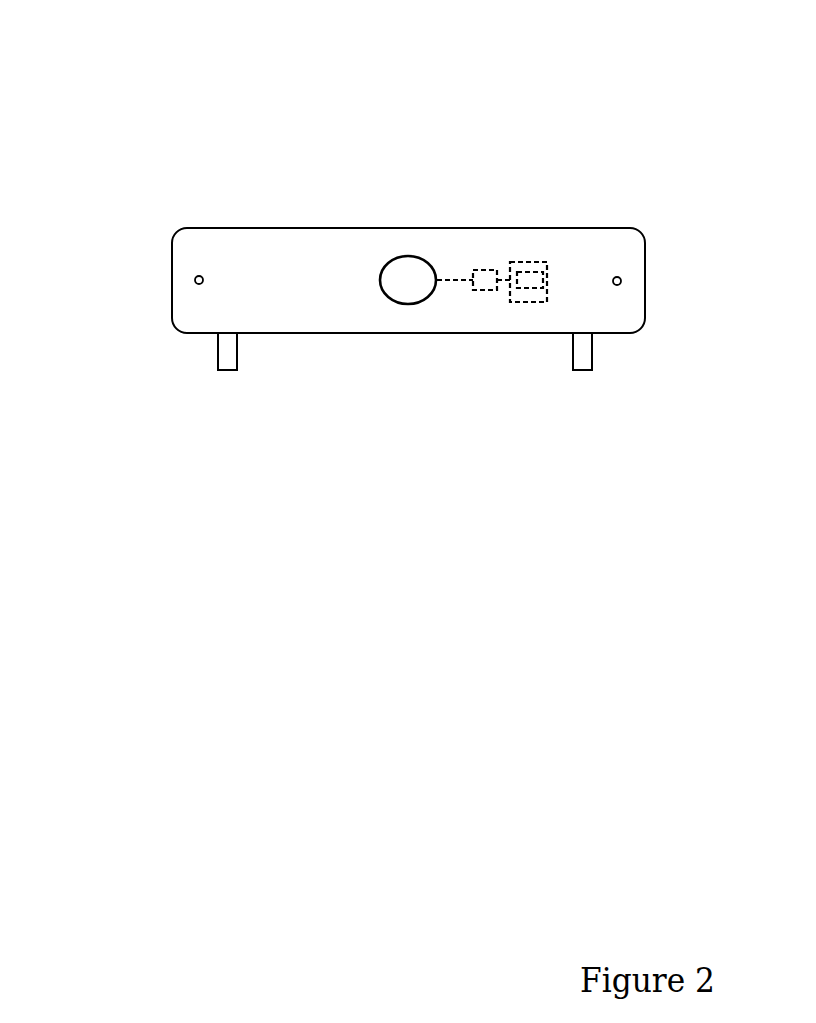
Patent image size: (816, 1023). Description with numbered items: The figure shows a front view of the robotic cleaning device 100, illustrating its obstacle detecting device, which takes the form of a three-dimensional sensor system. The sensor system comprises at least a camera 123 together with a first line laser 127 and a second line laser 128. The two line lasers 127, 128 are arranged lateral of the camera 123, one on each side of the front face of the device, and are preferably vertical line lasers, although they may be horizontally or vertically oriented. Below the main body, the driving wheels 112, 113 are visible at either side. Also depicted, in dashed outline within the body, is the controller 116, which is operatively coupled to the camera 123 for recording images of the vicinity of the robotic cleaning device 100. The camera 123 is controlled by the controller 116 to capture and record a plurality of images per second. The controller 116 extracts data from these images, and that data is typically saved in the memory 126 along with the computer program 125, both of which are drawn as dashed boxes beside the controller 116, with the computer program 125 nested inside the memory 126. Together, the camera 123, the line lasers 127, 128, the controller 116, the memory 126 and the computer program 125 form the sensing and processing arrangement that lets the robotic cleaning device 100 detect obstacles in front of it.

The robotic cleaning device 100 is at (155, 58).
The driving wheel 112 is at (218, 366).
The driving wheel 113 is at (592, 366).
The controller 116 is at (487, 271).
The camera 123 is at (408, 255).
The computer program 125 is at (530, 275).
The memory 126 is at (550, 277).
The first line laser 127 is at (199, 275).
The second line laser 128 is at (617, 276).